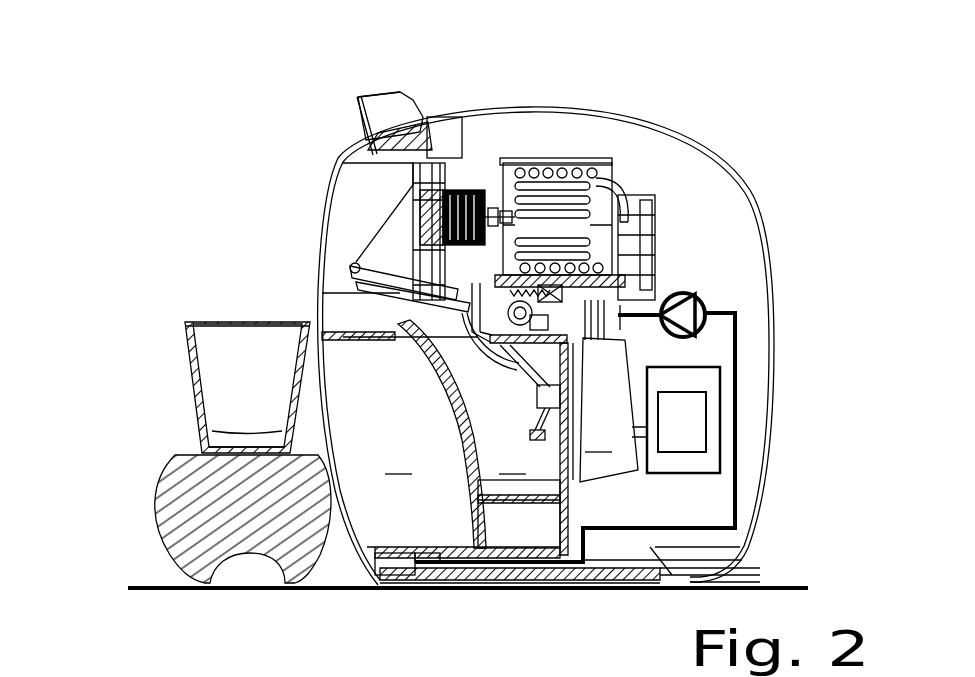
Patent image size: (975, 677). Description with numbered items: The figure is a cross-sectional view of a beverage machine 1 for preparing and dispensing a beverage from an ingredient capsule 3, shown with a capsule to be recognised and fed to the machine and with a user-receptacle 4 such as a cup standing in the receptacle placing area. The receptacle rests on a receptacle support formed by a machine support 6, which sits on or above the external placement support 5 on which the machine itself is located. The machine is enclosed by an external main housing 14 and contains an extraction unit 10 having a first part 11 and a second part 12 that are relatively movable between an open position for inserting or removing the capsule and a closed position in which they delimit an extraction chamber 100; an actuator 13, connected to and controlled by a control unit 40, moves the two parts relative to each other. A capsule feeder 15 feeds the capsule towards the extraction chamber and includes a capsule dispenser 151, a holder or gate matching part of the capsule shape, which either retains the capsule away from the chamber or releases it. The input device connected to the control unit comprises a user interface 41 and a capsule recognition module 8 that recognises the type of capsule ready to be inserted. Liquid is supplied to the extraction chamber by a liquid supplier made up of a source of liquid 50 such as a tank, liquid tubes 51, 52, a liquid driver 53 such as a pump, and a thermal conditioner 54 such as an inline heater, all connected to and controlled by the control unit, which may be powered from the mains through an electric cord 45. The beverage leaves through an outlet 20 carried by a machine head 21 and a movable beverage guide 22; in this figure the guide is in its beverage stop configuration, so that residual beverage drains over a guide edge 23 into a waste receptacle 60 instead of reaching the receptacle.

The beverage machine 1 is at (765, 158).
The ingredient capsule 3 is at (378, 103).
The user-receptacle 4 is at (192, 370).
The external placement support 5 is at (131, 571).
The machine support 6 is at (155, 490).
The capsule recognition module 8 is at (312, 153).
The extraction unit 10 is at (514, 139).
The first part 11 is at (437, 173).
The second part 12 is at (505, 185).
The actuator 13 is at (609, 410).
The external main housing 14 is at (675, 138).
The capsule feeder 15 is at (370, 67).
The outlet 20 is at (475, 316).
The machine head 21 is at (322, 212).
The movable beverage guide 22 is at (357, 263).
The guide edge 23 is at (475, 322).
The control unit 40 is at (712, 440).
The user interface 41 is at (387, 268).
The electric cord 45 is at (760, 568).
The source of liquid 50 is at (513, 451).
The liquid tube 51 is at (735, 392).
The liquid tube 52 is at (680, 293).
The liquid driver 53 is at (707, 308).
The thermal conditioner 54 is at (598, 163).
The waste receptacle 60 is at (525, 449).
The extraction chamber 100 is at (463, 210).
The capsule dispenser 151 is at (423, 123).